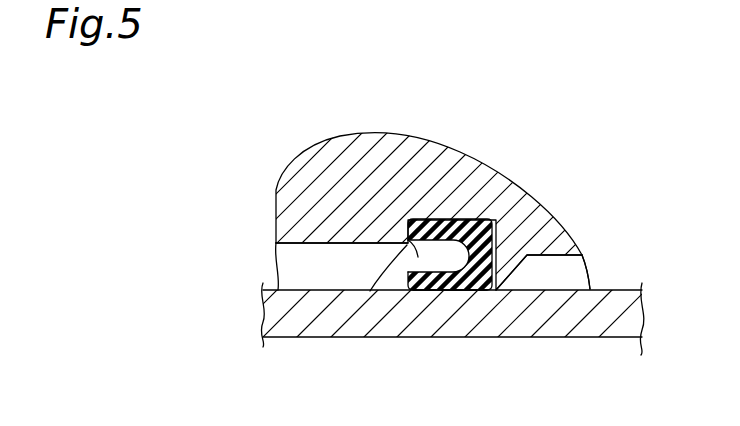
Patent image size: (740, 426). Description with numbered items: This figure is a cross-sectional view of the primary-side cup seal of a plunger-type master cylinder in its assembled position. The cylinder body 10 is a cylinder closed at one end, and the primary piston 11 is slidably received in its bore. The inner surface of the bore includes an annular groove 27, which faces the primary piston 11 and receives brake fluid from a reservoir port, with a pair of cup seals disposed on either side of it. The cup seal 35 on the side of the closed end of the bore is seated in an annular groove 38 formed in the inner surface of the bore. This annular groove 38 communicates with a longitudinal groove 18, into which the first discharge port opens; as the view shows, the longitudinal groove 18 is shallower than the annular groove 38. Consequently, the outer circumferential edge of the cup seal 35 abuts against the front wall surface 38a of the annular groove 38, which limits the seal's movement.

The cylinder body 10 is at (276, 198).
The primary piston 11 is at (613, 300).
The longitudinal groove 18 is at (290, 277).
The annular groove 27 is at (553, 280).
The cup seal 35 is at (446, 282).
The annular groove 38 is at (481, 222).
The front wall surface 38a is at (370, 291).